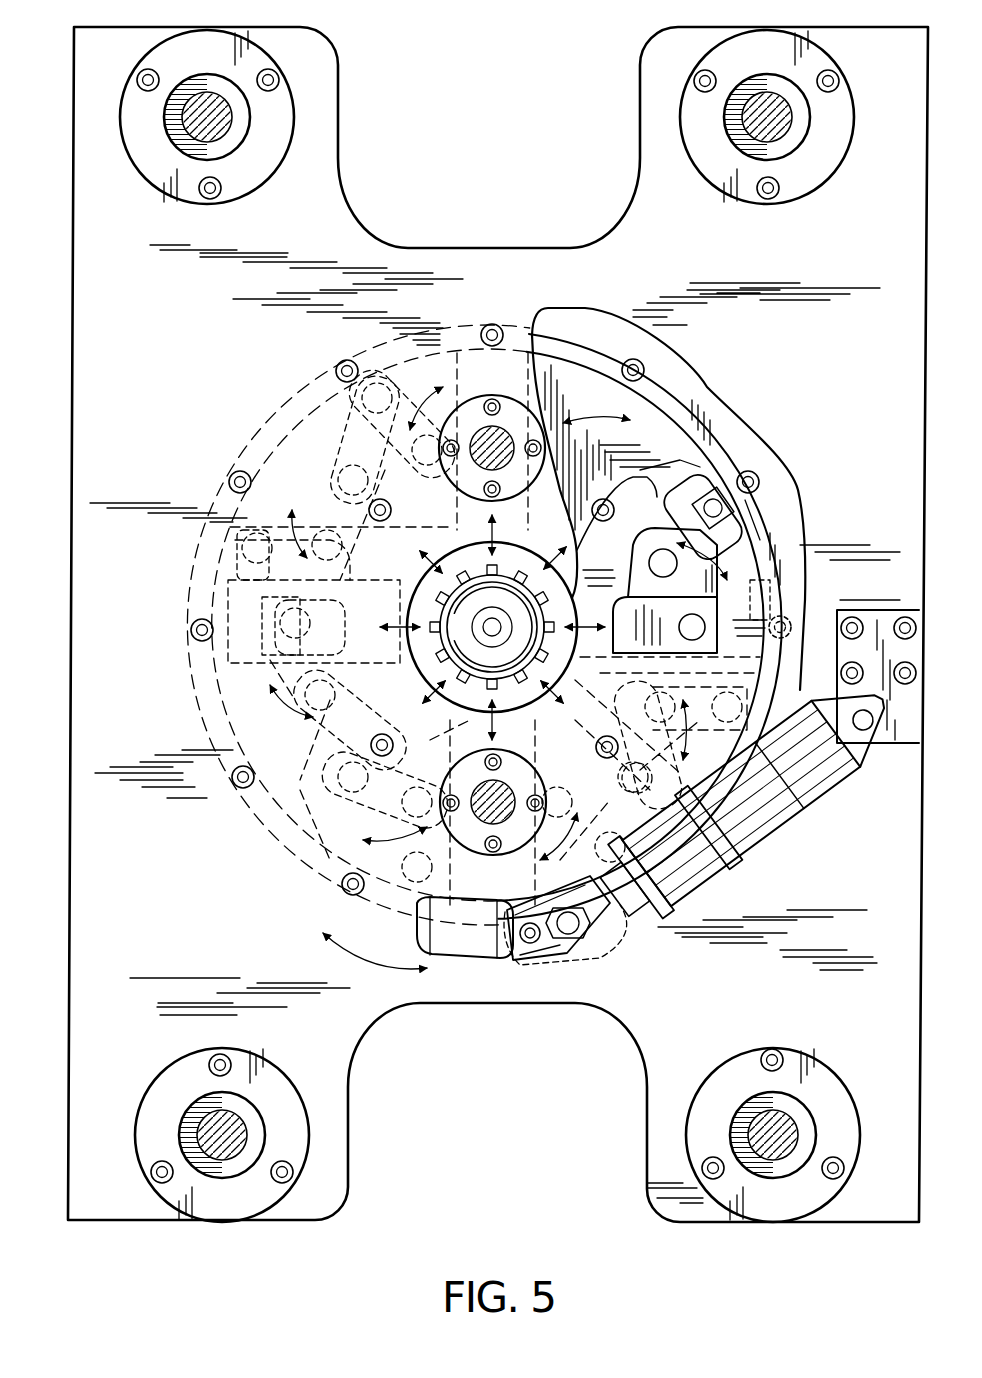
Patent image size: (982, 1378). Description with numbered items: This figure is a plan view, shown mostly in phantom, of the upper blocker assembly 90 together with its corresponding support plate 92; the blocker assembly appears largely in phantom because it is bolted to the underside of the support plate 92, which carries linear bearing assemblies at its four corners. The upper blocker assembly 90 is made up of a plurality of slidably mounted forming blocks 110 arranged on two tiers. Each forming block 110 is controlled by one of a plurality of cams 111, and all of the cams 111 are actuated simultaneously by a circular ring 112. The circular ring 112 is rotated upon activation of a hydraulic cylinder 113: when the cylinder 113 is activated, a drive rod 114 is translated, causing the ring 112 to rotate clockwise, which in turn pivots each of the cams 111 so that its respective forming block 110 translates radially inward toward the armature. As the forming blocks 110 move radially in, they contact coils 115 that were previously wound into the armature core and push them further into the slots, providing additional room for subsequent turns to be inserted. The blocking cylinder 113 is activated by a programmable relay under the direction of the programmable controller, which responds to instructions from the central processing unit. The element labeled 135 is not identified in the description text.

The upper blocker assembly 90 is at (677, 370).
The support plate 92 is at (826, 350).
The forming blocks 110 is at (690, 602).
The cams 111 is at (735, 522).
The circular ring 112 is at (722, 440).
The hydraulic cylinder 113 is at (772, 820).
The drive rod 114 is at (631, 895).
The coils 115 is at (513, 682).
The lever guide block 135 is at (420, 660).